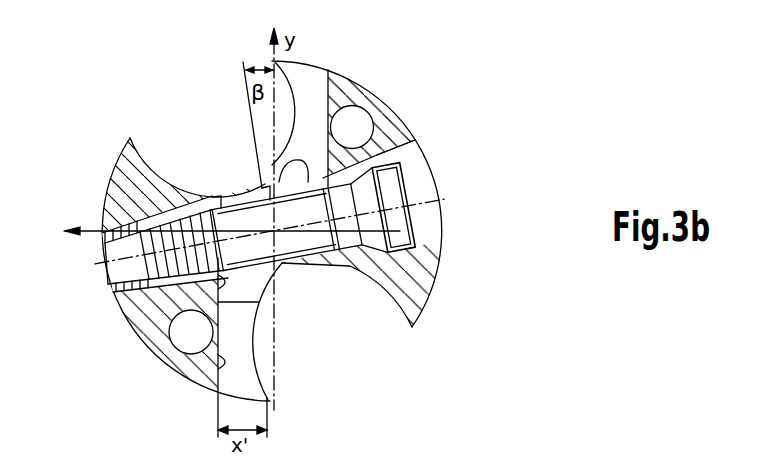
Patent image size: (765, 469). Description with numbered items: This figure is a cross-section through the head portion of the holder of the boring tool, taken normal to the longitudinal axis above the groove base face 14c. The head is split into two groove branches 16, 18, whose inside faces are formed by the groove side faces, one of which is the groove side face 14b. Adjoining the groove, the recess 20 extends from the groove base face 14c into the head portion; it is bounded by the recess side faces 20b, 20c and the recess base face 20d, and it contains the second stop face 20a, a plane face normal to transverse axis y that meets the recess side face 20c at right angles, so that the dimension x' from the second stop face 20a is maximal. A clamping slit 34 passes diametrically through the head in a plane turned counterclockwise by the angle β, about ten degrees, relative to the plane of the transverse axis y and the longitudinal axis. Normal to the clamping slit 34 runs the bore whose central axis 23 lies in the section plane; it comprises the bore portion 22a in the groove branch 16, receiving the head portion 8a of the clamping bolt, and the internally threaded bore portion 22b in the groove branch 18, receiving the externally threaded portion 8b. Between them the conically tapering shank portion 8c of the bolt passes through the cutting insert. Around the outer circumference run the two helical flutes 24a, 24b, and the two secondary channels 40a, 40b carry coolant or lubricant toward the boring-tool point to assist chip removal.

The head portion of clamping bolt 8a is at (400, 231).
The externally threaded portion of clamping bolt 8b is at (285, 272).
The shank portion of clamping bolt 8c is at (115, 268).
The groove side face 14b is at (157, 385).
The groove base face 14c is at (307, 83).
The groove branch 16 is at (420, 137).
The groove branch 18 is at (122, 183).
The recess 20 is at (247, 192).
The second stop face 20a is at (268, 264).
The recess side face 20b is at (305, 162).
The recess side face 20c is at (150, 315).
The recess base face 20d is at (305, 157).
The bore portion 22a is at (420, 178).
The bore portion 22b is at (110, 248).
The central axis of bore 23 is at (458, 198).
The flute 24a is at (370, 307).
The flute 24b is at (182, 150).
The clamping slit 34 is at (272, 264).
The secondary channel 40a is at (350, 113).
The secondary channel 40b is at (190, 333).